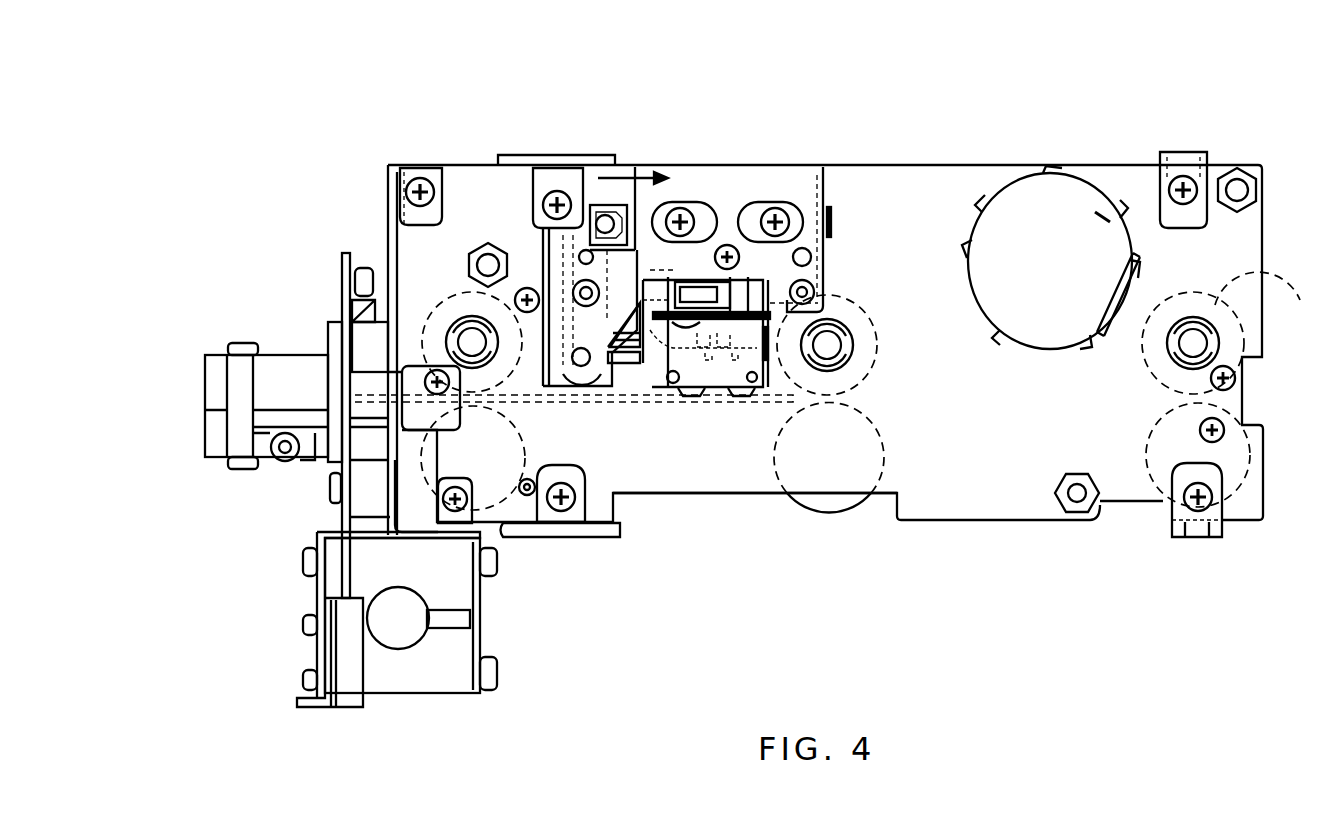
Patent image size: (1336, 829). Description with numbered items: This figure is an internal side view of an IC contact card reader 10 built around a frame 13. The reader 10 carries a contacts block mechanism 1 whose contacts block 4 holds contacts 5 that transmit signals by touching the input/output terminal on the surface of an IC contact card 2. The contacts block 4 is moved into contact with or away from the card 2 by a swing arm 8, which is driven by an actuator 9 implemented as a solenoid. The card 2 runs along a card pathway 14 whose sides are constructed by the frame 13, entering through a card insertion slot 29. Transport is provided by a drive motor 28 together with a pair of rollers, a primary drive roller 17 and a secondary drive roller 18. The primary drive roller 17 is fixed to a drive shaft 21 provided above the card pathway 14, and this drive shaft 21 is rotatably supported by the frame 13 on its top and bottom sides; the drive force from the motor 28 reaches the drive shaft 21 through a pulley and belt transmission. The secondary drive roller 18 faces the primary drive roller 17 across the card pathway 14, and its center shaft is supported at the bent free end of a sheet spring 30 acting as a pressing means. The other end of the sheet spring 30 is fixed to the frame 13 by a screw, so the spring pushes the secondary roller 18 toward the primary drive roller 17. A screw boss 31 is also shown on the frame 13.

The contacts block mechanism 1 is at (840, 214).
The IC contact card 2 is at (567, 405).
The contacts block 4 is at (700, 372).
The contacts 5 is at (666, 393).
The swing arm 8 is at (595, 187).
The actuator 9 is at (712, 180).
The IC contact card reader 10 is at (1218, 126).
The frame 13 is at (713, 493).
The card pathway 14 is at (186, 399).
The primary drive roller 17 is at (385, 250).
The secondary drive roller 18 is at (507, 510).
The drive shaft 21 is at (470, 332).
The drive motor 28 is at (1038, 210).
The card insertion slot 29 is at (207, 420).
The sheet spring 30 is at (610, 537).
The screw boss 31 is at (575, 535).